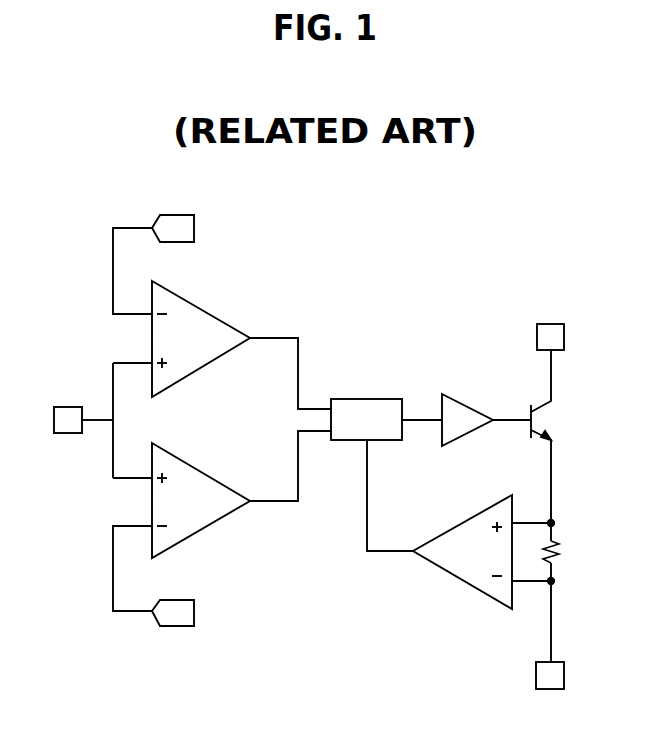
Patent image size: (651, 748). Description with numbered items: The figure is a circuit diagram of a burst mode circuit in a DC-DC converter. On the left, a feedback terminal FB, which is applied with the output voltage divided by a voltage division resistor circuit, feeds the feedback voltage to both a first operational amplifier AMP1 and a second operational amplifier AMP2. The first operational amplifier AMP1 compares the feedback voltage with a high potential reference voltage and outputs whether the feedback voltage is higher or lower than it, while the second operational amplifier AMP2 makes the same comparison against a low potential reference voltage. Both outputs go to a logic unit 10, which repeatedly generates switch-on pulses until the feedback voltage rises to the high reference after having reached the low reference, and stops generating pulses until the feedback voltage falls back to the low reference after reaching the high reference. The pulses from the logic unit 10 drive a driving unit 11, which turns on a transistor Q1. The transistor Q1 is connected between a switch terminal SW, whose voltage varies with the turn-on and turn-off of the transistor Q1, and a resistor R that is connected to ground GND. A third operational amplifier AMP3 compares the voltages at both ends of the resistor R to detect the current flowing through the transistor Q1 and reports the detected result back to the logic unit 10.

The logic unit 10 is at (377, 430).
The driving unit 11 is at (467, 430).
The transistor Q1 is at (553, 506).
The resistor R is at (562, 552).
The first operational amplifier AMP1 is at (201, 339).
The second operational amplifier AMP2 is at (201, 500).
The third operational amplifier AMP3 is at (462, 552).
The switch terminal SW is at (564, 337).
The ground GND is at (567, 675).
The feedback terminal FB is at (68, 422).